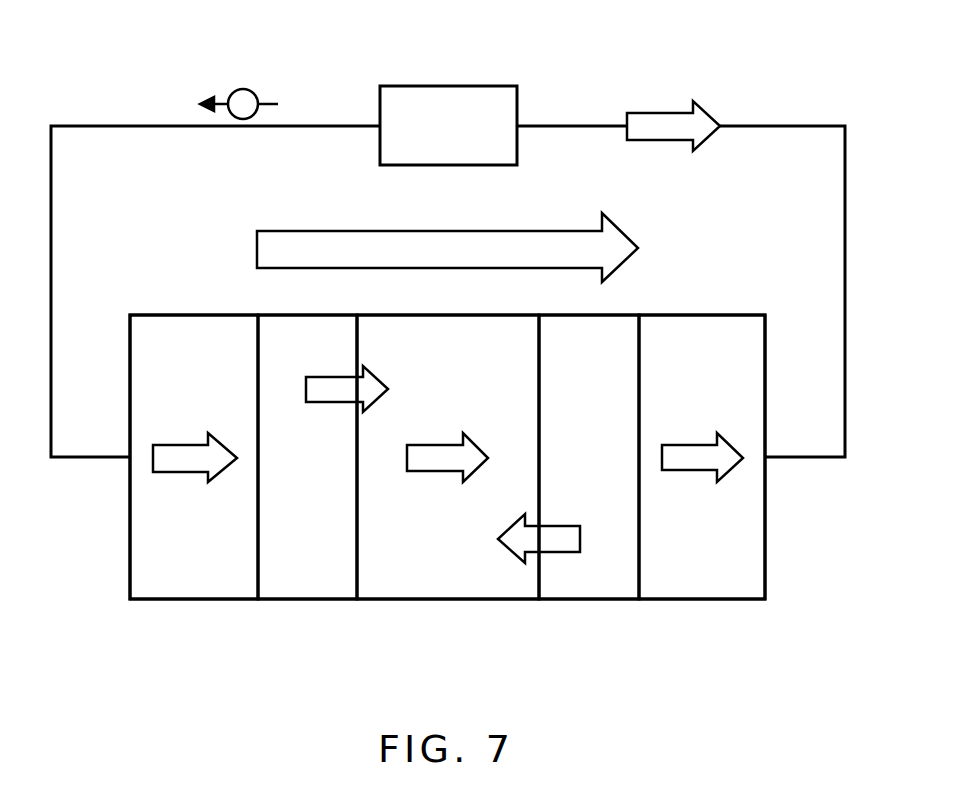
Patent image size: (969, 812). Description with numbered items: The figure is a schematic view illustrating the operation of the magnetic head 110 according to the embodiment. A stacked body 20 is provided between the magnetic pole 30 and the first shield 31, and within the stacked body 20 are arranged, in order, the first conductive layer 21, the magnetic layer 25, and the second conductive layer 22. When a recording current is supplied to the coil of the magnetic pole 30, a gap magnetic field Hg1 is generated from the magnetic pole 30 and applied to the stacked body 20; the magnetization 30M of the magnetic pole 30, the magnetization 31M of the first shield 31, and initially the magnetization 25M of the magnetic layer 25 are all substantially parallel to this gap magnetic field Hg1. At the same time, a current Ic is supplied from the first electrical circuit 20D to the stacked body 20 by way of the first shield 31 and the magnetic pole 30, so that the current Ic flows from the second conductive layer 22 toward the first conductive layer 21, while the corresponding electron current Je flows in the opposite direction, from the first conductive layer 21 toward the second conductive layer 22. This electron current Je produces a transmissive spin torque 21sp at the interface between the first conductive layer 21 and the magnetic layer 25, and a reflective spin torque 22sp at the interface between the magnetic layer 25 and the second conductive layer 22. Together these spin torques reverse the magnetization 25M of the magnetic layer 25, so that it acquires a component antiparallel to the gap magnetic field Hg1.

The magnetic head 110 is at (762, 68).
The first electrical circuit 20D is at (448, 98).
The electron current Je is at (243, 88).
The current Ic is at (664, 125).
The gap magnetic field Hg1 is at (445, 243).
The stacked body 20 is at (583, 663).
The first conductive layer 21 is at (309, 573).
The magnetic layer 25 is at (447, 573).
The second conductive layer 22 is at (585, 573).
The magnetic pole 30 is at (190, 335).
The first shield 31 is at (702, 335).
The magnetization of the magnetic pole 30M is at (182, 460).
The magnetization of the first shield 31M is at (688, 458).
The spin torque 21sp is at (333, 385).
The spin torque 22sp is at (560, 537).
The magnetization of the magnetic layer 25M is at (435, 458).